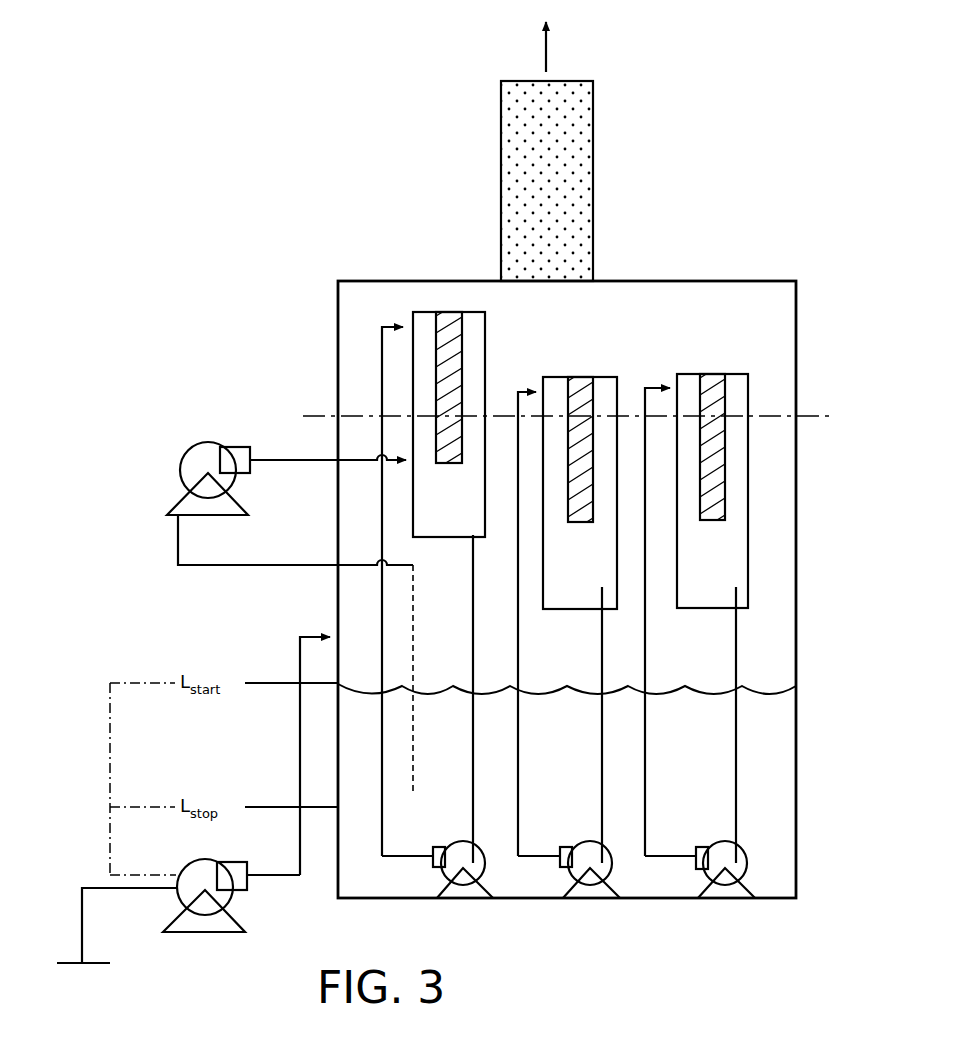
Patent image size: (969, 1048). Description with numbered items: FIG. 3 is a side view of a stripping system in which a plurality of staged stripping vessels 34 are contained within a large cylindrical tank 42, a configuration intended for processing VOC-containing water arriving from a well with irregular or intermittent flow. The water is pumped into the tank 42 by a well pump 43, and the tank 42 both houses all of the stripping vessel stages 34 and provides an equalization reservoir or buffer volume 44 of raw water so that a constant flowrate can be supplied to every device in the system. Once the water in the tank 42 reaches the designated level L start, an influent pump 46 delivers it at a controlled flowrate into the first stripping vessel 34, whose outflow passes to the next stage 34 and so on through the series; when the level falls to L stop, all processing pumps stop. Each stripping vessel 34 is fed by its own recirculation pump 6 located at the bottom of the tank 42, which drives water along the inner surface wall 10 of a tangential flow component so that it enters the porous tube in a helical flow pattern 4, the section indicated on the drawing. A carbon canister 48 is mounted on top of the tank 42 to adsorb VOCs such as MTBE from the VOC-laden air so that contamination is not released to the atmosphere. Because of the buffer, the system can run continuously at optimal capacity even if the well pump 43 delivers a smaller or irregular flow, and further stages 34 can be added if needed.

The helical flow pattern 4 is at (564, 416).
The recirculation pump 6 is at (590, 893).
The inner surface wall 10 is at (75, 957).
The stripping vessel 34 is at (424, 311).
The cylindrical tank 42 is at (750, 281).
The well pump 43 is at (216, 920).
The buffer volume 44 is at (769, 820).
The influent pump 46 is at (190, 462).
The carbon canister 48 is at (595, 172).